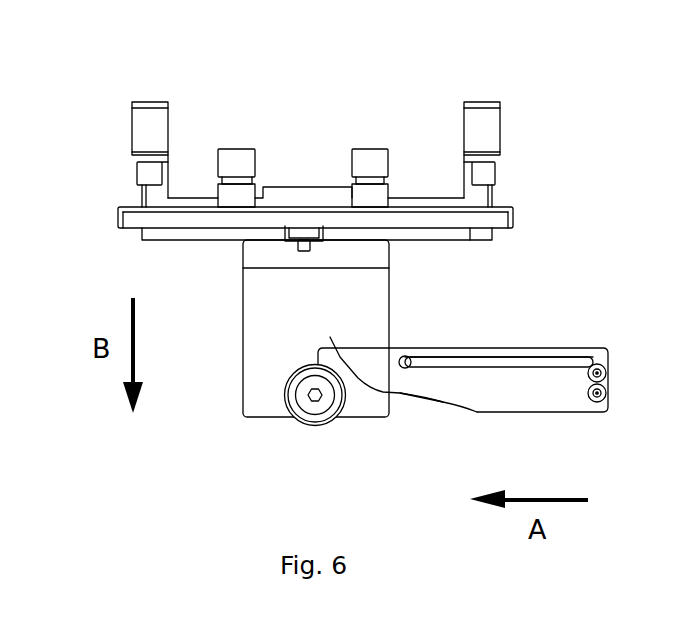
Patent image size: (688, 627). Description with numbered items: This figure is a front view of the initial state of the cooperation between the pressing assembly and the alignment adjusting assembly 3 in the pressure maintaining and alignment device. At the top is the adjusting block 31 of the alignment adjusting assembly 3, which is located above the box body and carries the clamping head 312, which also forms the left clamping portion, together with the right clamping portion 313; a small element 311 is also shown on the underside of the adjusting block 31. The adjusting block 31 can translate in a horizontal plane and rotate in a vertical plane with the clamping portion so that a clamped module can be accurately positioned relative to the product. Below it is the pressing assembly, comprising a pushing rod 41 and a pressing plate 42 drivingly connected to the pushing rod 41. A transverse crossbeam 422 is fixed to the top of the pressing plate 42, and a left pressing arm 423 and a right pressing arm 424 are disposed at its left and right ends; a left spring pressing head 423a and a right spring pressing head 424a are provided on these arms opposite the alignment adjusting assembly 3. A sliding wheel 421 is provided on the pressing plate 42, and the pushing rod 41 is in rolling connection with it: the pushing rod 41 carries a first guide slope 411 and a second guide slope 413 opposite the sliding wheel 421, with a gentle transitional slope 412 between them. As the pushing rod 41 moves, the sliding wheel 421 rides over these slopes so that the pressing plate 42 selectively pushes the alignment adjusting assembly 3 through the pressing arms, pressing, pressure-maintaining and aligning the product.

The alignment adjusting assembly 3 is at (118, 247).
The adjusting block 31 is at (123, 208).
The bracket 311 is at (287, 229).
The clamping head 312 is at (307, 250).
The right clamping portion 313 is at (372, 155).
The pushing rod 41 is at (538, 403).
The first guide slope 411 is at (330, 337).
The gentle transitional slope 412 is at (400, 395).
The second guide slope 413 is at (450, 402).
The pressing plate 42 is at (258, 333).
The sliding wheel 421 is at (302, 408).
The crossbeam 422 is at (480, 238).
The left pressing arm 423 is at (152, 113).
The left spring pressing head 423a is at (143, 177).
The right pressing arm 424 is at (483, 113).
The right spring pressing head 424a is at (488, 177).